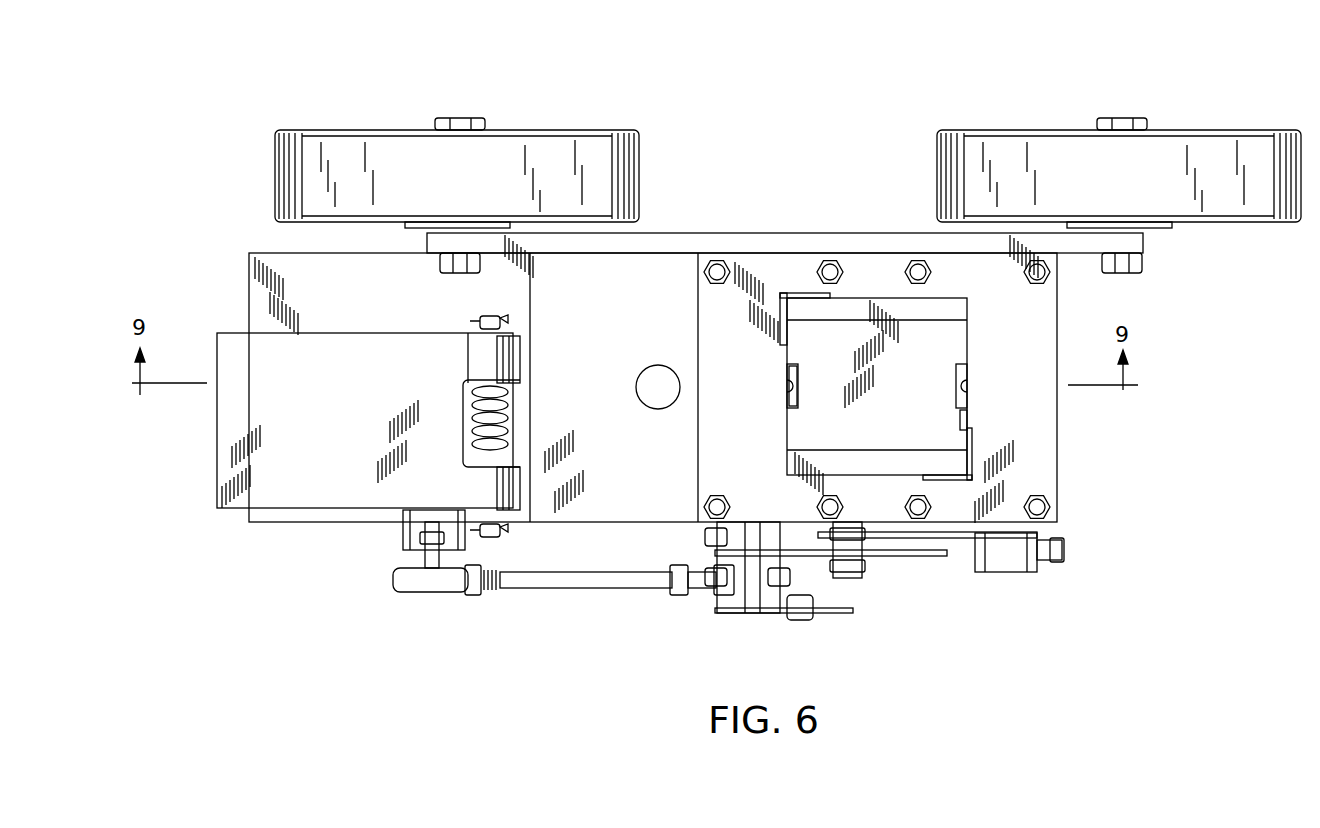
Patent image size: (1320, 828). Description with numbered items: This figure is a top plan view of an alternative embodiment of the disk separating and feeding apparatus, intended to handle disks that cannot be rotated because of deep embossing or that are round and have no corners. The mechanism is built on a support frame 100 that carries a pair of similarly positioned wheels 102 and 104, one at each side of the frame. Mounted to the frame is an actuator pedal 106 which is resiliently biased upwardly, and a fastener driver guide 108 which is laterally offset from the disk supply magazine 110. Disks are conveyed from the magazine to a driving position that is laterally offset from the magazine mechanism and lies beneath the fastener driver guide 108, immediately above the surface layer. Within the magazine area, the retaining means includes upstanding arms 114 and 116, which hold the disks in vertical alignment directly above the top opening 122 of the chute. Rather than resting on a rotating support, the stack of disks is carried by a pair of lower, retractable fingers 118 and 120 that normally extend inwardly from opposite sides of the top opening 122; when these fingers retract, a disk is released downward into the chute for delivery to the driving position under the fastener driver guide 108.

The support frame 100 is at (808, 272).
The wheel 102 is at (1187, 140).
The wheel 104 is at (362, 140).
The actuator pedal 106 is at (240, 500).
The fastener driver guide 108 is at (650, 410).
The disk supply magazine 110 is at (883, 283).
The upstanding arm 114 is at (972, 460).
The upstanding arm 116 is at (797, 293).
The retractable finger 118 is at (963, 387).
The retractable finger 120 is at (800, 368).
The top opening 122 is at (967, 420).